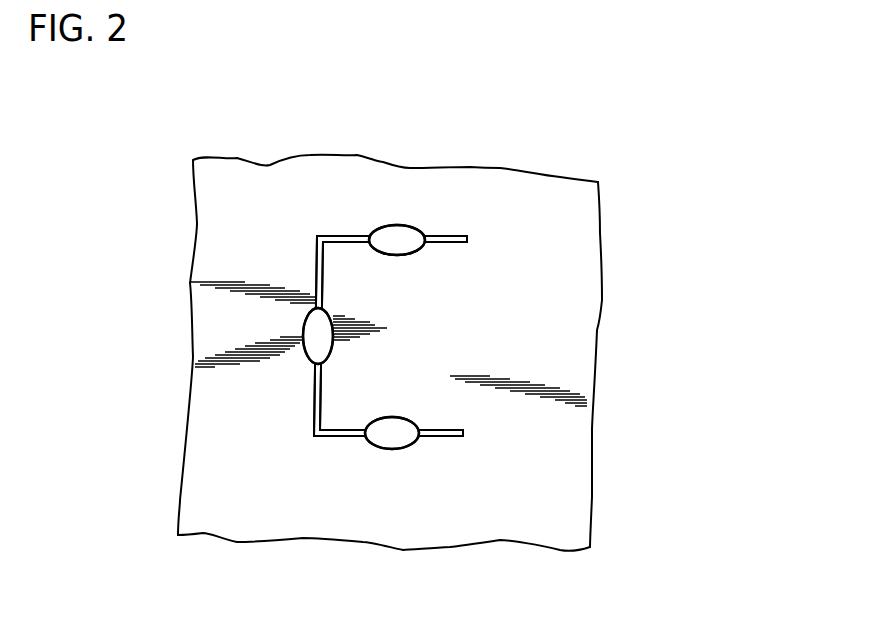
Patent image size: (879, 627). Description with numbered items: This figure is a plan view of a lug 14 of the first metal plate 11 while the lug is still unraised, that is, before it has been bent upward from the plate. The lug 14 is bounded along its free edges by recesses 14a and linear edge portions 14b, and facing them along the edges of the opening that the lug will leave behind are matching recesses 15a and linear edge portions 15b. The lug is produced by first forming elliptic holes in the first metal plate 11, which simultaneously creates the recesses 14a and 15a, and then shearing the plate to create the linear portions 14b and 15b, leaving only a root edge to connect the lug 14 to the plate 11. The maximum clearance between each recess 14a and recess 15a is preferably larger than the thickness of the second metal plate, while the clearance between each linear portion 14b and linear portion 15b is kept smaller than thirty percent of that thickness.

The first metal plate 11 is at (220, 262).
The lug 14 is at (437, 275).
The recess 14a is at (397, 255).
The linear edge portion 14b is at (323, 262).
The recess 15a is at (403, 225).
The linear edge portion 15b is at (317, 284).